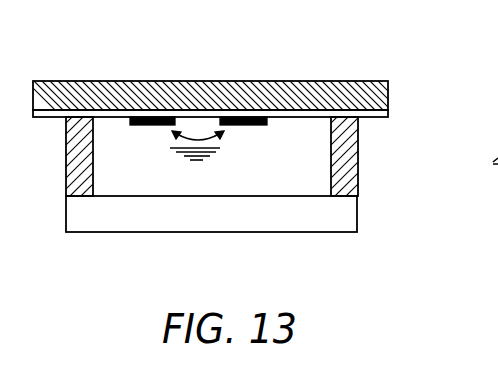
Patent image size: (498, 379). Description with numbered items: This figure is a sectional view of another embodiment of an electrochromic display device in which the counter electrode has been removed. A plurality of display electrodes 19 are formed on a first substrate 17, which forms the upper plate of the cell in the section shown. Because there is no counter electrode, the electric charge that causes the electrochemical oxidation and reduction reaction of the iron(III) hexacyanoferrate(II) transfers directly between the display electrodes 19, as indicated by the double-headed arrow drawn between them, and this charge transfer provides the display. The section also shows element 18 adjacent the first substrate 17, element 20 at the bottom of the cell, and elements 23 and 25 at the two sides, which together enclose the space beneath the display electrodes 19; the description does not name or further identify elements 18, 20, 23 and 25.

The first substrate 17 is at (356, 92).
The thin layer on plate 18 is at (388, 112).
The display electrodes 19 is at (152, 117).
The base plate 20 is at (325, 222).
The right side wall 23 is at (317, 177).
The left side wall 25 is at (73, 163).